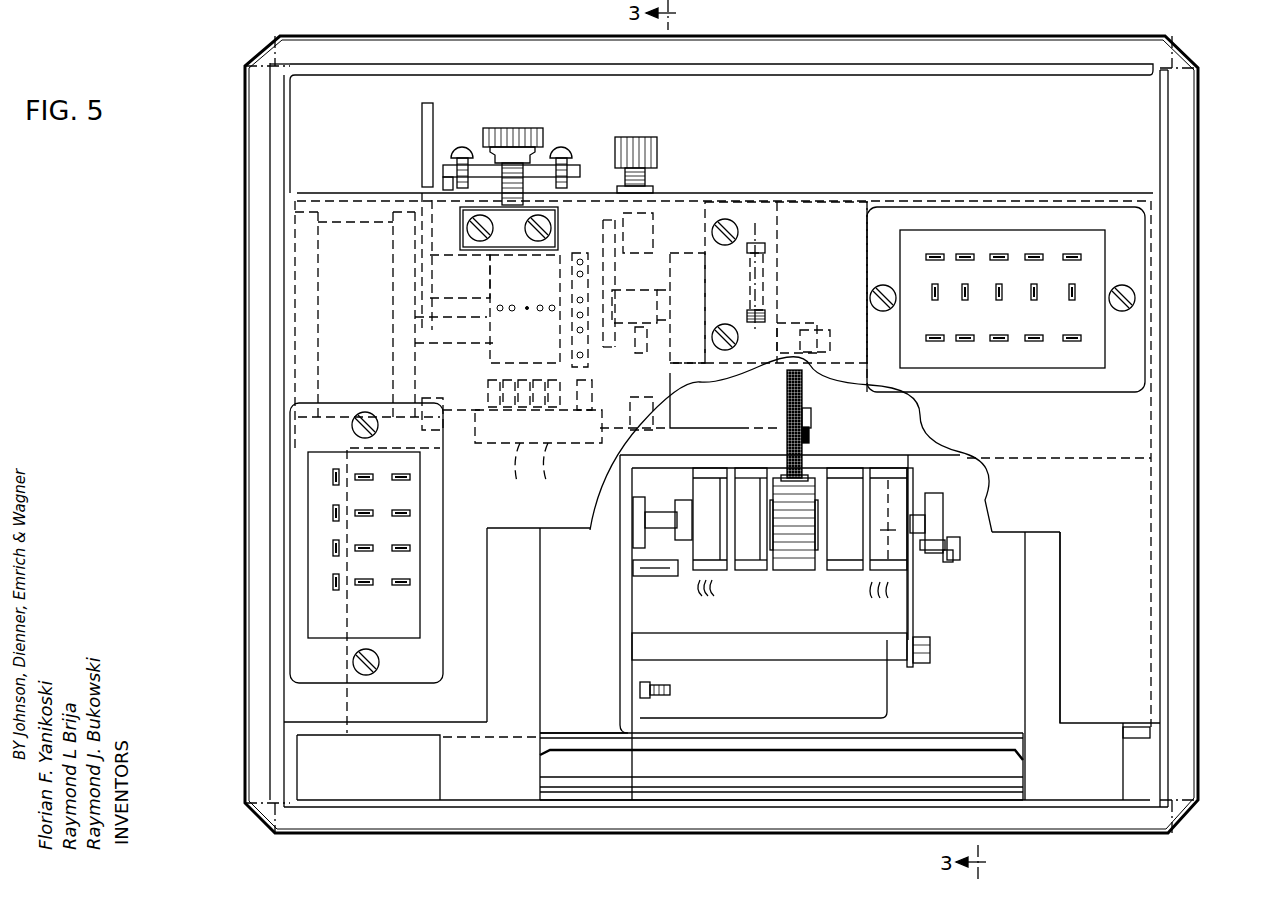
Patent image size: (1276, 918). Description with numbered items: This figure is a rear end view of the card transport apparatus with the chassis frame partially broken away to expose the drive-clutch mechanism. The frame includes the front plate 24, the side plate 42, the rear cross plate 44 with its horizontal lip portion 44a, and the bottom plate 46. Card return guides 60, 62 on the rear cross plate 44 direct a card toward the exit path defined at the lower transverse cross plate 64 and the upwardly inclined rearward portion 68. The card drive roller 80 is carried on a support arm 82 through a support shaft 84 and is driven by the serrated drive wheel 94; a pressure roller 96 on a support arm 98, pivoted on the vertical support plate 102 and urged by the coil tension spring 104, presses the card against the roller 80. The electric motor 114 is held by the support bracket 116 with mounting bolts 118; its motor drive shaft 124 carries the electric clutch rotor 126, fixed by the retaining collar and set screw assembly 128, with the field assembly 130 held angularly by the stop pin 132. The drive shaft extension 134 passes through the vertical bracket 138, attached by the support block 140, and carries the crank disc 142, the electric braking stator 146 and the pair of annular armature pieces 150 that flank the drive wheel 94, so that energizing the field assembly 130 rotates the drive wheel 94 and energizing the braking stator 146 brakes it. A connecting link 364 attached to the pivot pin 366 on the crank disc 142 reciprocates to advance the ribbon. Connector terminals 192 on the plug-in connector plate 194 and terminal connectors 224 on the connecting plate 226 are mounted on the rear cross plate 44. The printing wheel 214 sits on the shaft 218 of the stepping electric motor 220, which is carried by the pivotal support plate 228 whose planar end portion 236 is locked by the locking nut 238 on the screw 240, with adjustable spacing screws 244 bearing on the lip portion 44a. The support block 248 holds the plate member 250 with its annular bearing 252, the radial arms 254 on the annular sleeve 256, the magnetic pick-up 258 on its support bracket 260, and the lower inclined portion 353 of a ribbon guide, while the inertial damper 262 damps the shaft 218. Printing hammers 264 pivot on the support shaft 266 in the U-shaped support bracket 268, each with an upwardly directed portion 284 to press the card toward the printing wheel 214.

The front plate 24 is at (1199, 333).
The side plate 42 is at (277, 307).
The rear cross plate 44 is at (1138, 612).
The lip portion 44a is at (828, 202).
The bottom plate 46 is at (346, 807).
The card return guide 60 is at (1078, 788).
The card return guide 62 is at (480, 782).
The transverse cross plate 64 is at (605, 797).
The upwardly inclined rearward portion 68 is at (738, 770).
The drive wheel 80 is at (803, 393).
The support arm 82 is at (809, 439).
The support shaft 84 is at (811, 421).
The drive wheel 94 is at (788, 475).
The pressure roller 96 is at (812, 330).
The support arm 98 is at (778, 320).
The vertical support plate 102 is at (727, 205).
The coil tension spring 104 is at (770, 250).
The electric motor 114 is at (610, 637).
The support bracket 116 is at (990, 699).
The mounting bolts 118 is at (672, 692).
The motor drive shaft 124 is at (652, 522).
The electric clutch rotor 126 is at (750, 575).
The retaining collar and set screw assembly 128 is at (680, 500).
The field assembly 130 is at (724, 593).
The stop pin 132 is at (655, 568).
The drive shaft extension 134 is at (927, 556).
The vertical bracket 138 is at (912, 637).
The support block 140 is at (795, 655).
The crank disc 142 is at (950, 480).
The electric braking stator 146 is at (876, 572).
The annular armature pieces 150 is at (795, 577).
The connector terminals 192 is at (1040, 286).
The plug-in connector plate 194 is at (942, 215).
The printing wheel 214 is at (488, 262).
The shaft 218 is at (474, 302).
The stepping electric motor 220 is at (283, 258).
The terminal connectors 224 is at (360, 496).
The connecting plate 226 is at (320, 590).
The support plate 228 is at (422, 115).
The planar end portion 236 is at (445, 178).
The locking nut 238 is at (533, 96).
The screw 240 is at (523, 183).
The adjustable spacing screws 244 is at (462, 150).
The support block 248 is at (430, 235).
The plate member 250 is at (592, 365).
The annular bearing 252 is at (622, 360).
The radial arms 254 is at (650, 270).
The annular sleeve 256 is at (660, 300).
The magnetic pick-up 258 is at (657, 140).
The support bracket 260 is at (655, 186).
The inertial damper 262 is at (740, 365).
The printing hammers 264 is at (463, 395).
The support shaft 266 is at (517, 482).
The U-shaped support bracket 268 is at (490, 452).
The upwardly directed portion 284 is at (546, 480).
The lower inclined portion 353 is at (433, 332).
The connecting link 364 is at (955, 563).
The pivot pin 366 is at (961, 548).